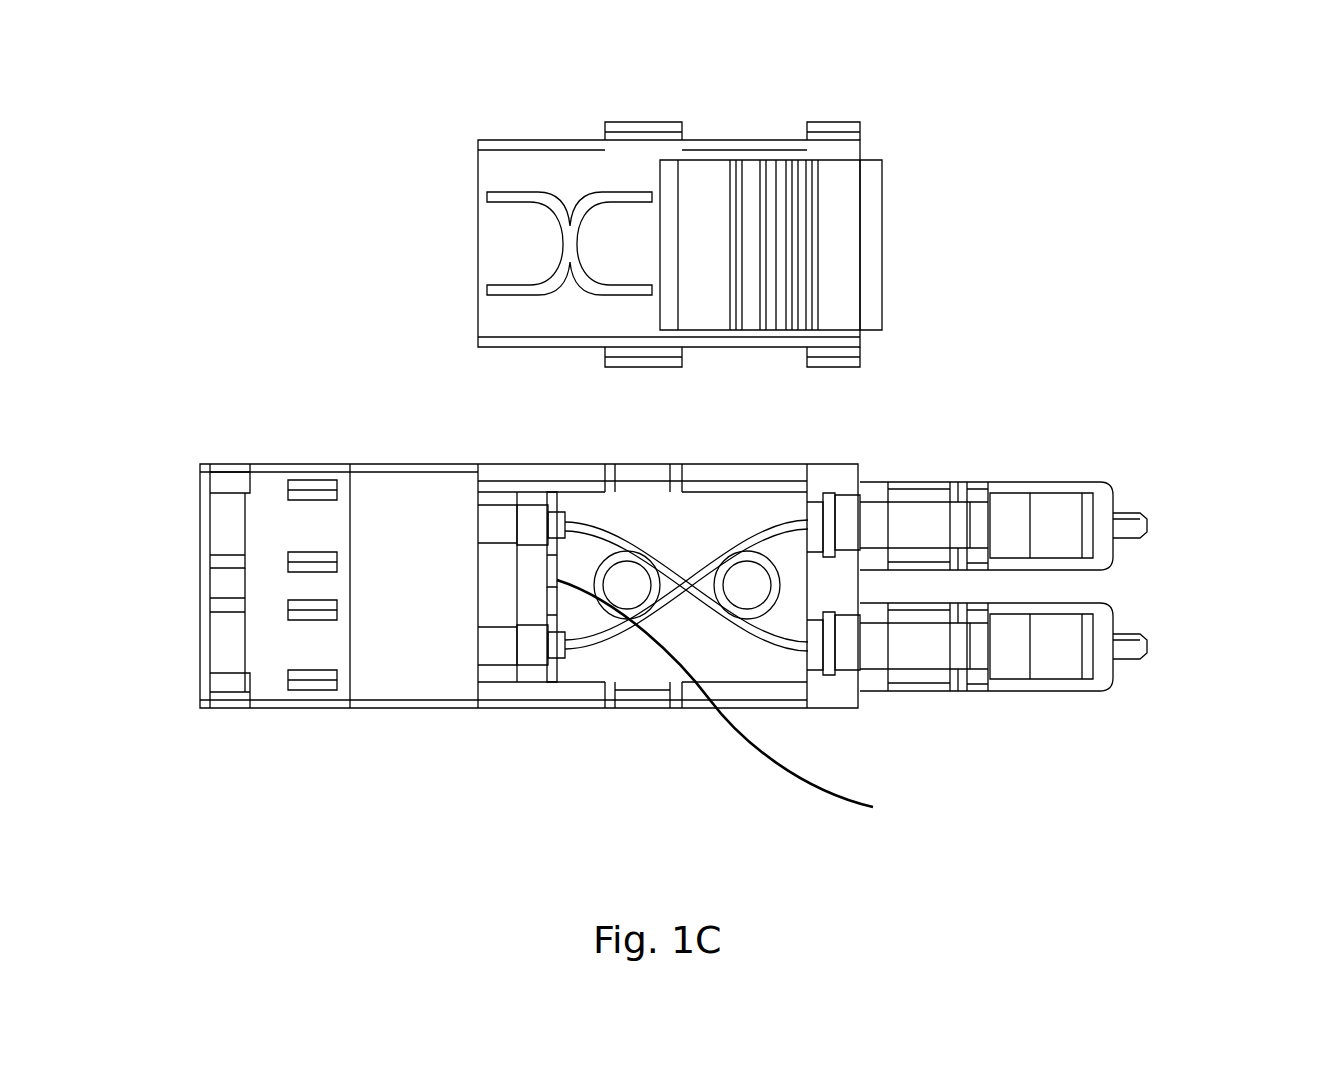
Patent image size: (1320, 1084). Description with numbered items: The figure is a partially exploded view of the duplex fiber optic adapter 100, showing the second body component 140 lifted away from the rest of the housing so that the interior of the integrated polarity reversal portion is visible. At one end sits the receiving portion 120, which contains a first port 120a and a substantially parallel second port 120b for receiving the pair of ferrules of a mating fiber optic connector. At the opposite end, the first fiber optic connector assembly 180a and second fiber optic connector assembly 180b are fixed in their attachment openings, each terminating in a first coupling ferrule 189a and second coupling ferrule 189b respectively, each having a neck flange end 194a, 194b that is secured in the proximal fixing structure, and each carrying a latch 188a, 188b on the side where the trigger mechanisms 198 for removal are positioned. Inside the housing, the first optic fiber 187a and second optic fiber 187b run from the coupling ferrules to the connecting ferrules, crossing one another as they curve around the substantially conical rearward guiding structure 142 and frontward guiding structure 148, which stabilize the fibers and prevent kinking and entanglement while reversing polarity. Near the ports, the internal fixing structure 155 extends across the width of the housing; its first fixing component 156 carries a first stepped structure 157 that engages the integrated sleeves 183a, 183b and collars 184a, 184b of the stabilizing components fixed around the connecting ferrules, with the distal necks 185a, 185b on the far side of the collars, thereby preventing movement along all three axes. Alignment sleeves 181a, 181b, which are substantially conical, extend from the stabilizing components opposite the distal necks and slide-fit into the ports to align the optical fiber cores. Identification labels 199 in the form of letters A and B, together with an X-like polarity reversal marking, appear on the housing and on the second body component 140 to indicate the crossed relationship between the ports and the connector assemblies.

The duplex fiber optic adapter 100 is at (1176, 193).
The receiving portion 120 is at (318, 462).
The first port 120a is at (172, 638).
The second port 120b is at (162, 525).
The second body component 140 is at (577, 140).
The rearward guiding structure 142 is at (623, 585).
The frontward guiding structure 148 is at (748, 586).
The internal fixing structure 155 is at (450, 750).
The first fixing component 156 is at (507, 665).
The first stepped structure 157 is at (745, 704).
The first fiber optic connector assembly 180a is at (1083, 691).
The second fiber optic connector assembly 180b is at (1100, 482).
The first alignment sleeve 181a is at (500, 510).
The second alignment sleeve 181b is at (490, 628).
The first integrated sleeve 183a is at (546, 665).
The second integrated sleeve 183b is at (553, 682).
The first collar 184a is at (545, 503).
The second collar 184b is at (550, 655).
The first distal neck 185a is at (568, 520).
The second distal neck 185b is at (566, 645).
The first optic fiber 187a is at (782, 650).
The second optic fiber 187b is at (748, 500).
The first latch 188a is at (877, 663).
The second latch 188b is at (877, 543).
The first coupling ferrule 189a is at (1148, 656).
The second coupling ferrule 189b is at (1148, 522).
The first neck flange end 194a is at (862, 682).
The second neck flange end 194b is at (818, 493).
The trigger mechanisms 198 is at (660, 168).
The identification labels 199 is at (703, 278).